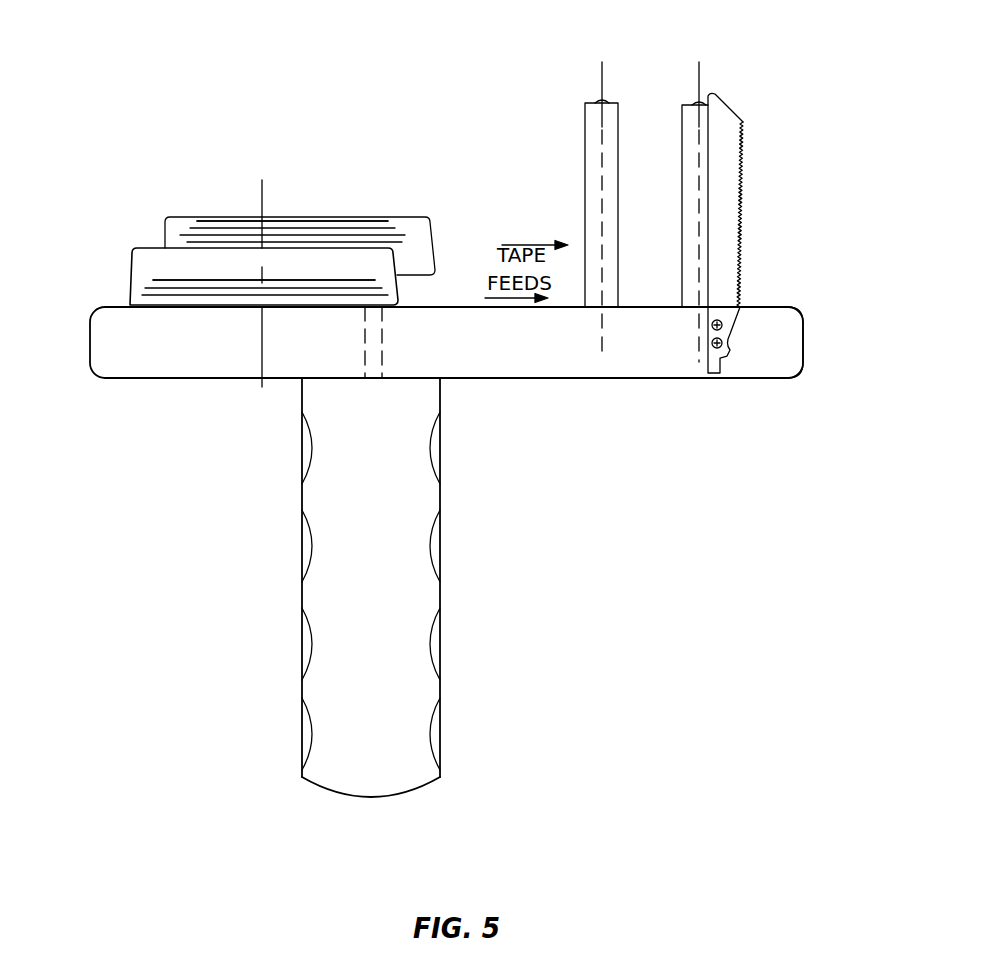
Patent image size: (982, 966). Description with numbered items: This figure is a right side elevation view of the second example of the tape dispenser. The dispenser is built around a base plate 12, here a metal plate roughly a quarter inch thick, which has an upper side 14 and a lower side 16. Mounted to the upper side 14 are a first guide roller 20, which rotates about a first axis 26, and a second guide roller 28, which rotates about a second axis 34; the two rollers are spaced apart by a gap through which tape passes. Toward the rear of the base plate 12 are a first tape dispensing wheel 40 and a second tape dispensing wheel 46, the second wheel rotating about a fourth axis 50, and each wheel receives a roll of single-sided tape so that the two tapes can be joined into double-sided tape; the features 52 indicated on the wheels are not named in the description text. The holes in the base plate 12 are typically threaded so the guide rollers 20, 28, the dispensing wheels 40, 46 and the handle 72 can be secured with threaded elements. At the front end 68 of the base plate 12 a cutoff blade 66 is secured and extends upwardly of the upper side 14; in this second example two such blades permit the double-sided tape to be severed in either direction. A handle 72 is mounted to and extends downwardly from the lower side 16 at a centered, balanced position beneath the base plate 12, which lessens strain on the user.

The base plate 12 is at (193, 390).
The upper side 14 is at (760, 307).
The lower side 16 is at (502, 390).
The first guide roller 20 is at (682, 112).
The first axis 26 is at (600, 75).
The second guide roller 28 is at (584, 147).
The second axis 34 is at (702, 75).
The first tape dispensing wheel 40 is at (165, 233).
The second tape dispensing wheel 46 is at (135, 282).
The fourth axis 50 is at (260, 192).
The grip ridges on pads 52 is at (397, 265).
The cutoff blade 66 is at (702, 335).
The front end 68 is at (792, 342).
The handle 72 is at (436, 553).